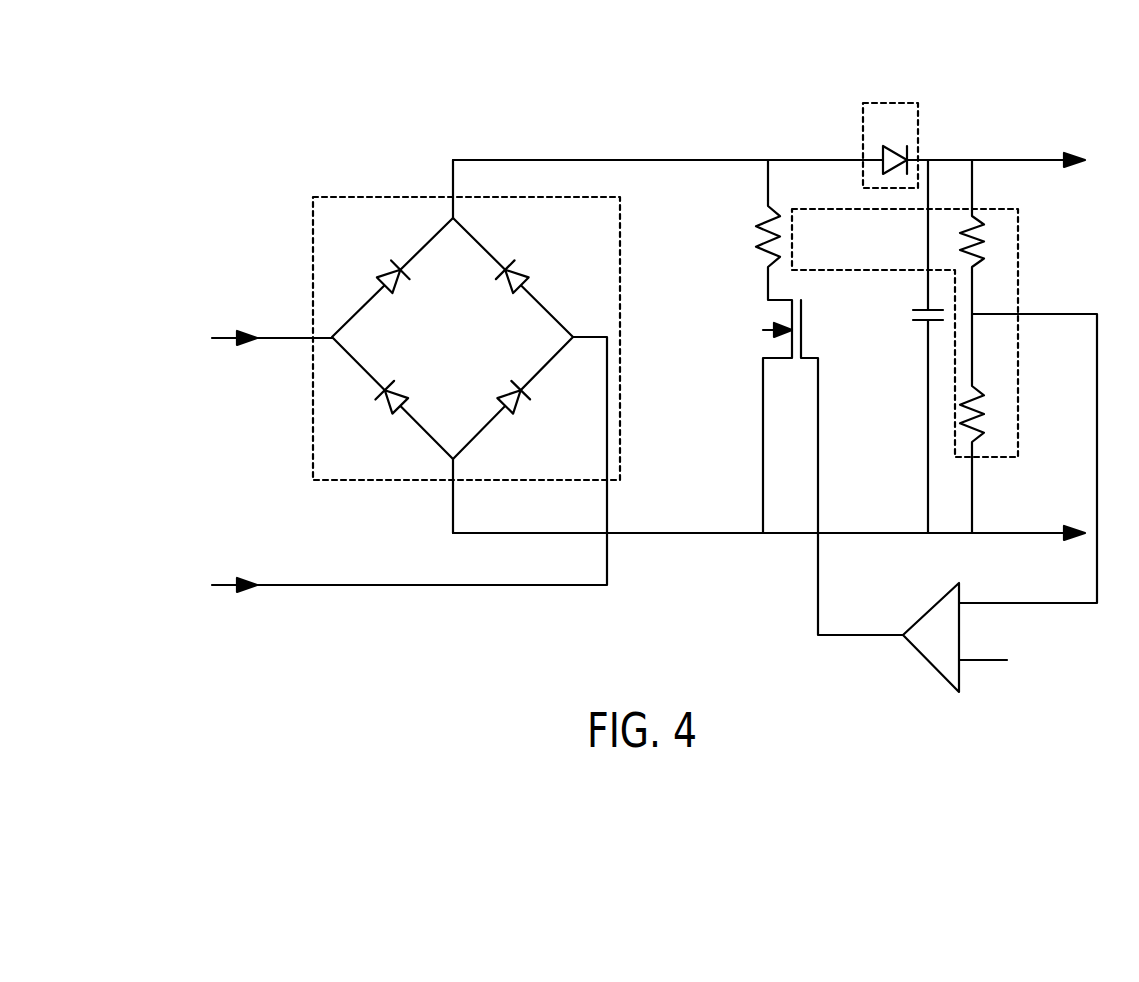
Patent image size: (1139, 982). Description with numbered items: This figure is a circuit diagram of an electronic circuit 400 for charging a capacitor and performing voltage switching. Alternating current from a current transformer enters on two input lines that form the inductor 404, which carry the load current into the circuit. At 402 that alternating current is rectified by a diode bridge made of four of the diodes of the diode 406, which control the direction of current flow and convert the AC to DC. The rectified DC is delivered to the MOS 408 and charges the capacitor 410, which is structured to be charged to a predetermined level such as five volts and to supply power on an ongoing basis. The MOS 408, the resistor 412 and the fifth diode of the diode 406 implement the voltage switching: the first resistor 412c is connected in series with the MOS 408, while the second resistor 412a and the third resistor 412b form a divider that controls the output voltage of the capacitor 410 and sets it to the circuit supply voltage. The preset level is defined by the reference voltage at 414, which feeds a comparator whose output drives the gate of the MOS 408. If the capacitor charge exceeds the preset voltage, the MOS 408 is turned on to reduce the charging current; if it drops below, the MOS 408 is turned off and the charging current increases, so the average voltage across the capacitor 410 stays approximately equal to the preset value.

The electronic circuit 400 is at (1040, 132).
The rectification 402 is at (162, 518).
The inductor 404 is at (293, 338).
The diode 406 is at (622, 225).
The metal-oxide semiconductor (MOS) 408 is at (702, 358).
The capacitor 410 is at (887, 332).
The resistor 412 is at (894, 346).
The resistor R2 412a is at (1008, 253).
The resistor R3 412b is at (995, 445).
The resistor R1 412c is at (825, 236).
The Vref 414 is at (913, 648).